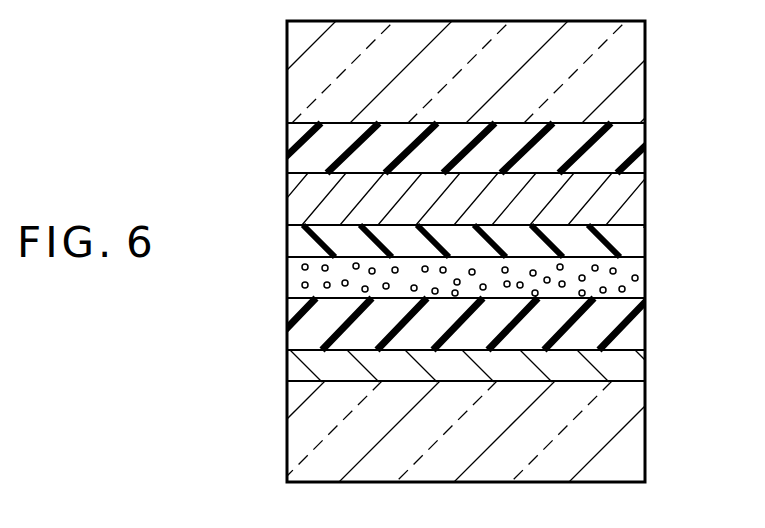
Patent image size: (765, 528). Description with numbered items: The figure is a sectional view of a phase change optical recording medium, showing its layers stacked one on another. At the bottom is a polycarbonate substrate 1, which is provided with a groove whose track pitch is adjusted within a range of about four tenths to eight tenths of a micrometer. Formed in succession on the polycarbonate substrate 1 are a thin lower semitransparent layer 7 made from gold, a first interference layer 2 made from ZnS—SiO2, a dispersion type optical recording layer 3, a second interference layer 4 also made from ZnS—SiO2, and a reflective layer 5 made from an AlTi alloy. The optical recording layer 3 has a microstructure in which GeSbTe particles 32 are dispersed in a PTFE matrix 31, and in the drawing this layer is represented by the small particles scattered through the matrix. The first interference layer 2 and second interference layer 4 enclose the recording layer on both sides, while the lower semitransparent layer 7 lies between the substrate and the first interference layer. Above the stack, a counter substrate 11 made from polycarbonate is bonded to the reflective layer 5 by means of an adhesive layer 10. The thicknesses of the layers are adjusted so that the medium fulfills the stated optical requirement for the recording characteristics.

The polycarbonate substrate 1 is at (635, 428).
The first interference layer 2 is at (635, 327).
The dispersion type optical recording layer 3 is at (648, 278).
The PTFE matrix 31 is at (300, 285).
The GeSbTe particles 32 is at (300, 266).
The second interference layer 4 is at (632, 240).
The reflective layer 5 is at (632, 202).
The lower semitransparent layer 7 is at (635, 377).
The adhesive layer 10 is at (632, 145).
The counter substrate 11 is at (632, 53).